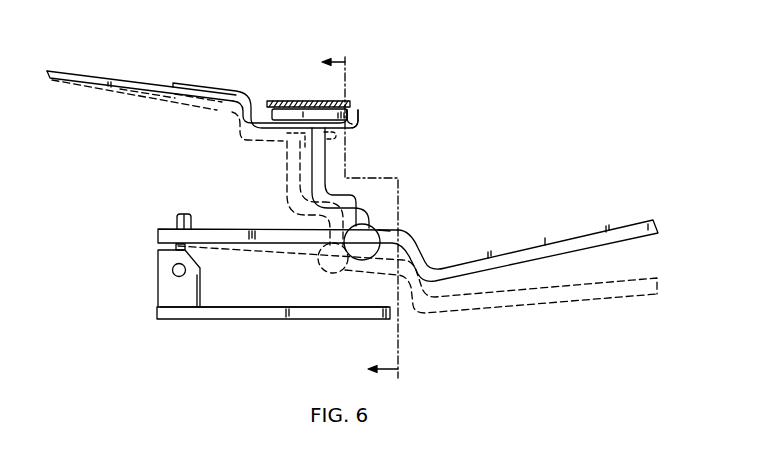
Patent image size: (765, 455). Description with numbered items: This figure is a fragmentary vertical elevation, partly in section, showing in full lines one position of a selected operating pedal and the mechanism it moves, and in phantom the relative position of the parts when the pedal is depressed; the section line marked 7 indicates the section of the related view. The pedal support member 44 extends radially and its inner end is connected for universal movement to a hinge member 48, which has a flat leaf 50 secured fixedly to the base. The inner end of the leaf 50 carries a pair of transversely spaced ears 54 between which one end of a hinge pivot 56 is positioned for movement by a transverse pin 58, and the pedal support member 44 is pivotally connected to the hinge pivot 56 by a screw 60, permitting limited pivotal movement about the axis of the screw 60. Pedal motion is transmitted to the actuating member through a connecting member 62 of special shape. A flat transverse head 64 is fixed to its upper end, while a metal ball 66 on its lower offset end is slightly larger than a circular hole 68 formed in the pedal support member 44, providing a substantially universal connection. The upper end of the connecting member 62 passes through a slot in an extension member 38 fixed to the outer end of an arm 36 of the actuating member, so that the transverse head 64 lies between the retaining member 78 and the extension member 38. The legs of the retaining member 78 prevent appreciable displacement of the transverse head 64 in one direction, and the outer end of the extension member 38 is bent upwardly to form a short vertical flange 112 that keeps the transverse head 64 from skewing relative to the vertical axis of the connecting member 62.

The section line 7- 7 is at (370, 217).
The arm 36 is at (157, 86).
The extension member 38 is at (238, 92).
The pedal support member 44 is at (428, 253).
The hinge member 48 is at (232, 325).
The flat leaf 50 is at (295, 312).
The ear 54 is at (168, 298).
The hinge pivot 56 is at (175, 247).
The transverse pin 58 is at (172, 272).
The screw 60 is at (181, 216).
The connecting member 62 is at (346, 189).
The transverse head 64 is at (324, 110).
The metal ball 66 is at (362, 252).
The circular hole 68 is at (378, 232).
The retaining member 78 is at (298, 100).
The vertical flange 112 is at (360, 121).